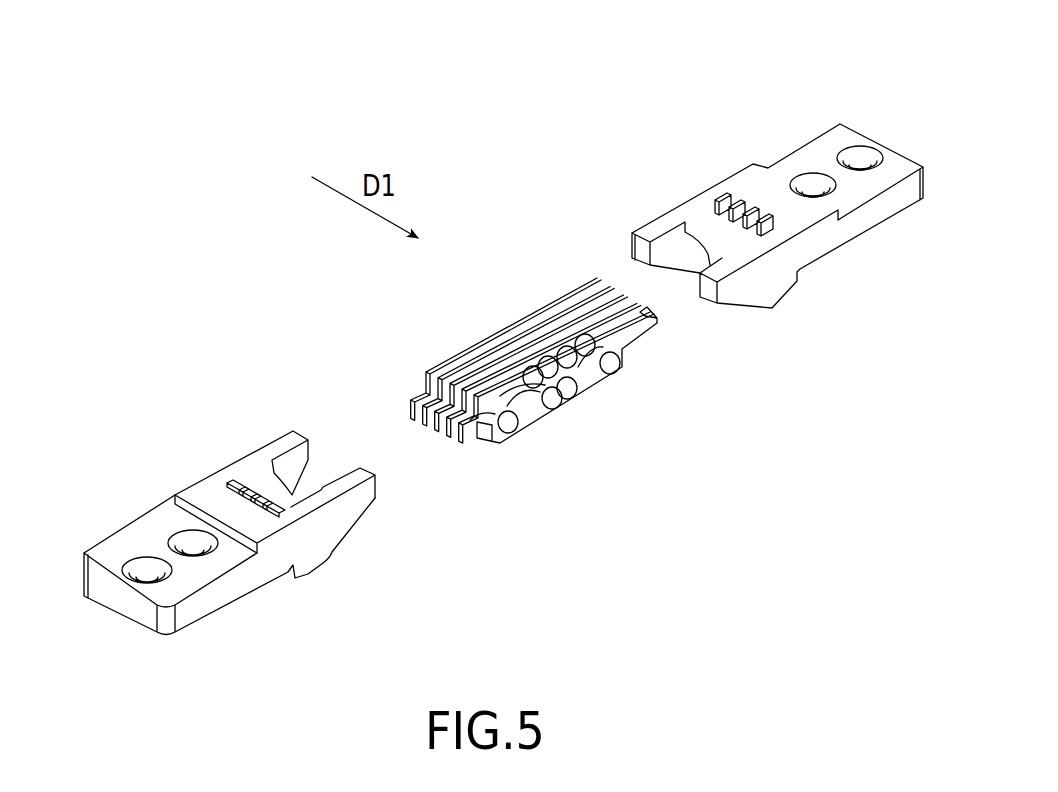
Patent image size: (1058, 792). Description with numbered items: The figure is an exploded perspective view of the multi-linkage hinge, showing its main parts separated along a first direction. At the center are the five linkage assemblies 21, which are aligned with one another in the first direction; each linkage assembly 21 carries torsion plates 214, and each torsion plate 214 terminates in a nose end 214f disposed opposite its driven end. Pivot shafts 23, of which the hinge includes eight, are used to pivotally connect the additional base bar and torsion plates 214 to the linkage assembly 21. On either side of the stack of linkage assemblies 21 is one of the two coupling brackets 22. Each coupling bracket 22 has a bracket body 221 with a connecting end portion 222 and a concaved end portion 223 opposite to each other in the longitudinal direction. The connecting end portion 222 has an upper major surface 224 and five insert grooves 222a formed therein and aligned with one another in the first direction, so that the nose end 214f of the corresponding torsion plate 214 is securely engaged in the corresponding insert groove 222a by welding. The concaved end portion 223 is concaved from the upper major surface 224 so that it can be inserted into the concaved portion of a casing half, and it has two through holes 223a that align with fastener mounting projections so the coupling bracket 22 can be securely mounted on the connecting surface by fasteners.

The linkage assembly 21 is at (500, 385).
The coupling bracket 22 is at (488, 345).
The pivot shaft 23 is at (510, 431).
The torsion plate 214 is at (490, 396).
The nose end 214f is at (410, 388).
The bracket body 221 is at (254, 568).
The connecting end portion 222 is at (474, 364).
The insert groove 222a is at (252, 486).
The concaved end portion 223 is at (136, 560).
The through hole 223a is at (188, 553).
The upper major surface 224 is at (308, 499).